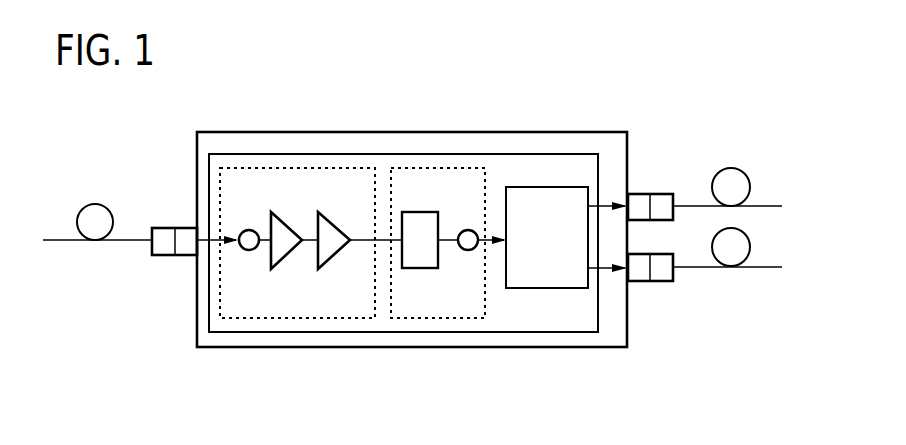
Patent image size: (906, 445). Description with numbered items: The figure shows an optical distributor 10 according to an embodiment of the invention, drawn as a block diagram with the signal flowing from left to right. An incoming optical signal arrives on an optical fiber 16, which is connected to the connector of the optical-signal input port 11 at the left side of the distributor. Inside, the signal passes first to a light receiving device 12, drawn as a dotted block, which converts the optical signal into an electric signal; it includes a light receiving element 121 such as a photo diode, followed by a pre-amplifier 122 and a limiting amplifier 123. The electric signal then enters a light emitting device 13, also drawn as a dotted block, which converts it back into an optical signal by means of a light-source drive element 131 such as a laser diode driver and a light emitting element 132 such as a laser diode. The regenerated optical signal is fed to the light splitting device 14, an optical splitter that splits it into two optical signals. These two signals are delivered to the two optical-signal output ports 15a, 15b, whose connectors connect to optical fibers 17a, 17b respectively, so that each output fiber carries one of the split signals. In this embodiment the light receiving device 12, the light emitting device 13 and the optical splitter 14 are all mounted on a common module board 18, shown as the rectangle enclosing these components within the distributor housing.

The optical distributor 10 is at (283, 130).
The optical-signal input port 11 is at (166, 227).
The light receiving device 12 is at (352, 167).
The light emitting device 13 is at (448, 167).
The light splitting device 14 is at (577, 186).
The optical-signal output port 15a is at (642, 193).
The optical-signal output port 15b is at (641, 283).
The optical fiber 16 is at (95, 204).
The optical fiber 17a is at (731, 168).
The optical fiber 17b is at (733, 268).
The module board 18 is at (527, 152).
The light receiving element 121 is at (250, 251).
The pre-amplifier 122 is at (287, 256).
The limiting amplifier 123 is at (334, 256).
The light-source drive element 131 is at (417, 268).
The light emitting element 132 is at (470, 251).